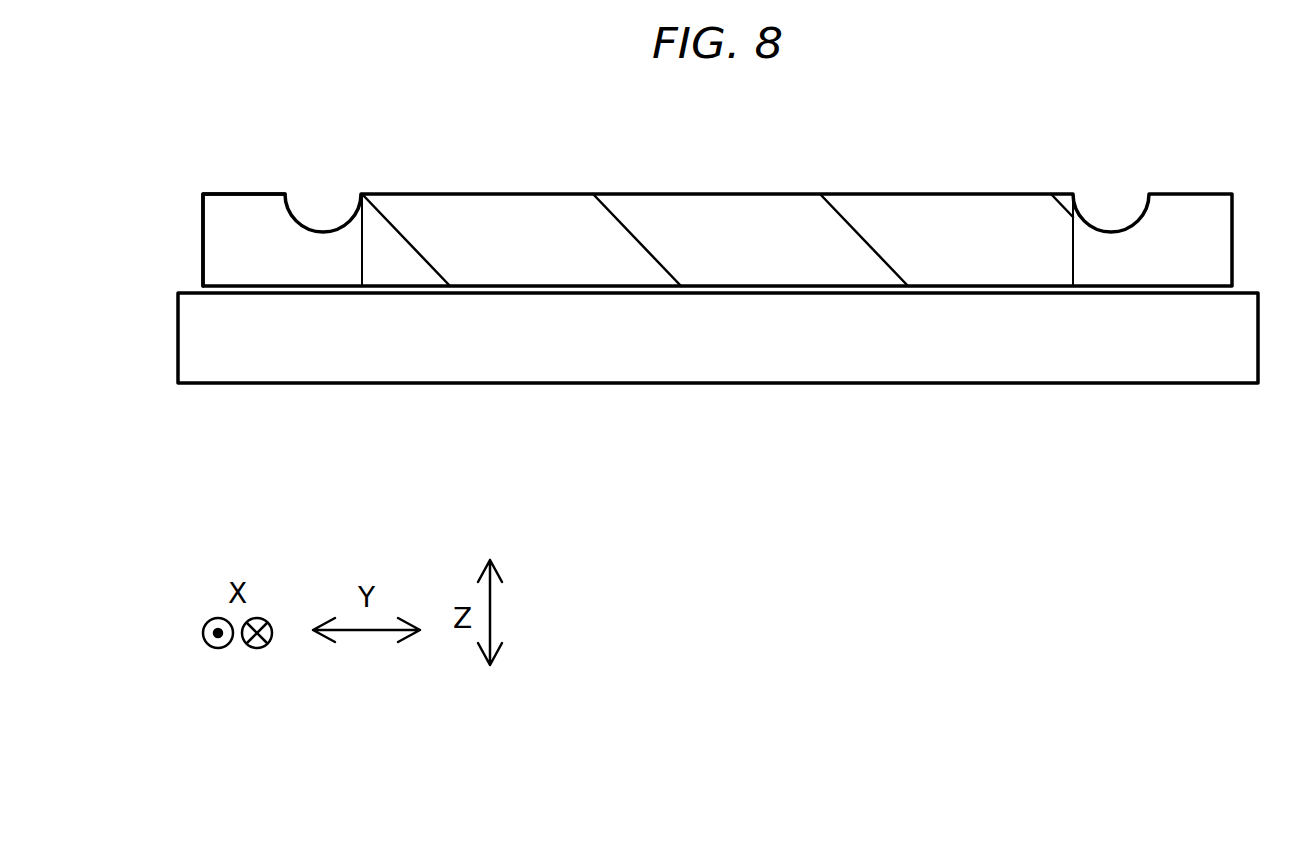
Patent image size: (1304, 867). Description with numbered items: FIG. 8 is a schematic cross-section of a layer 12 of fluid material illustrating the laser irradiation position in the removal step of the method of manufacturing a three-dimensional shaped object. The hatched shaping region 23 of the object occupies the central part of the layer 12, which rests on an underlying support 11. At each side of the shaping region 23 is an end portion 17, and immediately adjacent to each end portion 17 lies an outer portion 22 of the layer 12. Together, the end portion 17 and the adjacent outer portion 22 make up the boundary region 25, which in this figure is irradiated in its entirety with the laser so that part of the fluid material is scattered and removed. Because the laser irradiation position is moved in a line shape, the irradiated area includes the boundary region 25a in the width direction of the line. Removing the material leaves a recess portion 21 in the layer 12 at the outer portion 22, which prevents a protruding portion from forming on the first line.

The substrate 11 is at (723, 360).
The layer 12 is at (253, 242).
The end portion 17 is at (373, 194).
The recess portion 21 is at (706, 177).
The outer portion 22 is at (318, 205).
The shaping region 23 is at (693, 225).
The boundary region 25 is at (729, 347).
The boundary region in the width direction of the line 25a is at (362, 310).